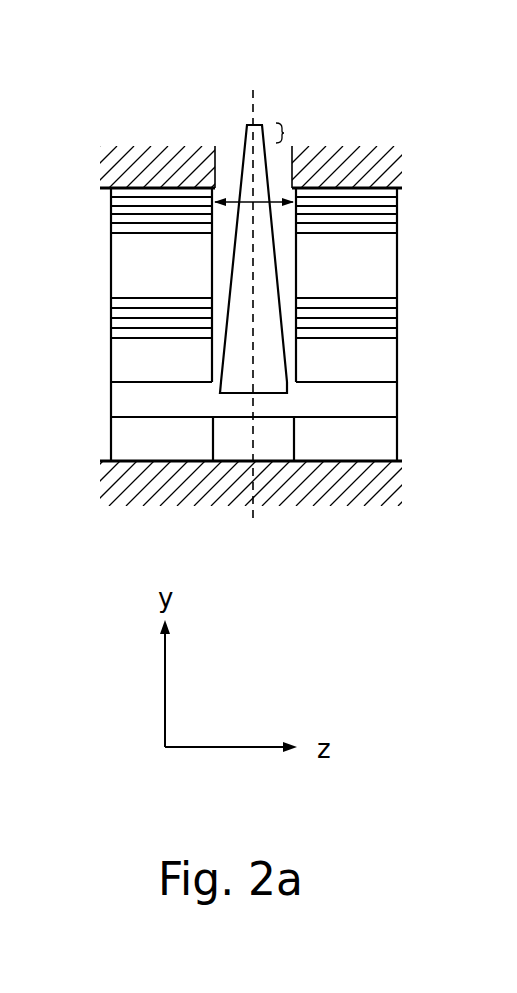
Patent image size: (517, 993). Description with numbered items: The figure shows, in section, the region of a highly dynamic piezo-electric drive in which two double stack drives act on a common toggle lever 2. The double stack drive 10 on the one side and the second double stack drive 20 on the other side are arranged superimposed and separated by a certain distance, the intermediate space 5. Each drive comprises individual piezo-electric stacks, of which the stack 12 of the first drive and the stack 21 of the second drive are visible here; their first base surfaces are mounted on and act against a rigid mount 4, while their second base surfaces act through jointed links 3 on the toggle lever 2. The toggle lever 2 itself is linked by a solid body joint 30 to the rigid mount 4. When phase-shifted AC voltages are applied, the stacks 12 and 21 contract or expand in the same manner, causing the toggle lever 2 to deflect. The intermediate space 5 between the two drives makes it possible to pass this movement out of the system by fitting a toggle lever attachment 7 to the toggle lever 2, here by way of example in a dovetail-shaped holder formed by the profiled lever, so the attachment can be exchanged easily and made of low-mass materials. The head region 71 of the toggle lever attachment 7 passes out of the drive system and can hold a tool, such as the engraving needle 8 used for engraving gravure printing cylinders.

The toggle lever 2 is at (140, 402).
The jointed links 3 is at (145, 363).
The rigid mount 4 is at (113, 170).
The intermediate space 5 is at (230, 200).
The toggle lever attachment 7 is at (243, 298).
The engraving needle 8 is at (257, 127).
The double stack drive 10 is at (168, 108).
The piezo-electric stack 12 is at (179, 281).
The second double stack drive 20 is at (367, 108).
The piezo-electric stack 21 is at (360, 281).
The solid body joint 30 is at (140, 442).
The head region 71 is at (285, 133).